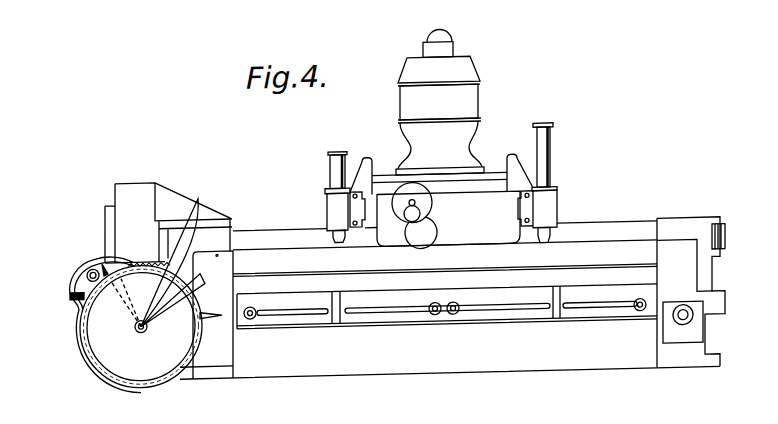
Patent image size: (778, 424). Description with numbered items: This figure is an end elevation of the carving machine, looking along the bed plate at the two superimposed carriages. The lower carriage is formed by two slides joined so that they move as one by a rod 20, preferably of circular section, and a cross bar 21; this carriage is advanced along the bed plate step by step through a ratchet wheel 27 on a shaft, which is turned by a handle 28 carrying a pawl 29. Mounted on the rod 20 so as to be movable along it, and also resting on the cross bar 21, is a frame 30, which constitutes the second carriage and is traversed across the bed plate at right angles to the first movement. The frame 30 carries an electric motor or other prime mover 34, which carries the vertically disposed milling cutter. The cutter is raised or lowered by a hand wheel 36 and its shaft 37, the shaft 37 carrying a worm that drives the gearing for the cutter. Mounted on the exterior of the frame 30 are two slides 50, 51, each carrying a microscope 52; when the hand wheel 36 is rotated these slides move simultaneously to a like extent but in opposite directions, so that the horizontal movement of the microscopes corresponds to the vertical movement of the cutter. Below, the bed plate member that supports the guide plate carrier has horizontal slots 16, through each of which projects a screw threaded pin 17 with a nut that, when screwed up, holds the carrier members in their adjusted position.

The horizontal slots 16 is at (321, 311).
The screw threaded pin 17 is at (453, 315).
The rod 20 is at (273, 236).
The cross bar 21 is at (262, 259).
The ratchet wheel 27 is at (113, 383).
The handle 28 is at (198, 197).
The pawl 29 is at (155, 245).
The frame 30 is at (448, 218).
The electric motor 34 is at (452, 70).
The hand wheel 36 is at (423, 202).
The shaft 37 is at (412, 203).
The slide 50 is at (345, 207).
The slide 51 is at (533, 212).
The microscope 52 is at (335, 154).